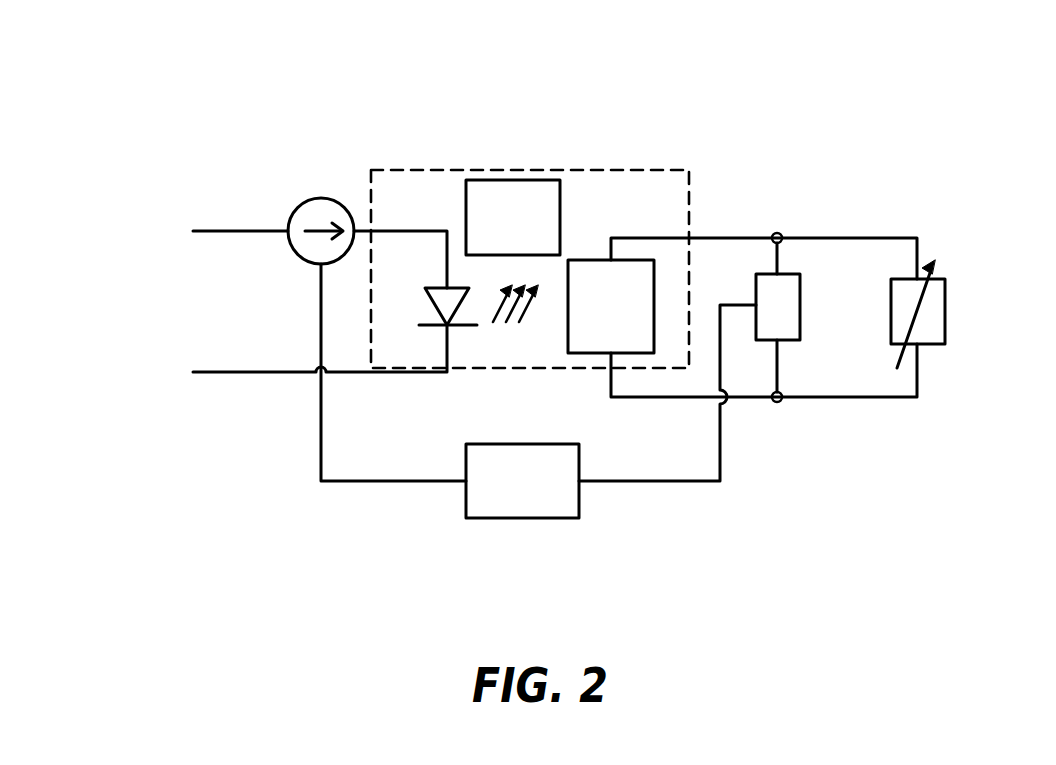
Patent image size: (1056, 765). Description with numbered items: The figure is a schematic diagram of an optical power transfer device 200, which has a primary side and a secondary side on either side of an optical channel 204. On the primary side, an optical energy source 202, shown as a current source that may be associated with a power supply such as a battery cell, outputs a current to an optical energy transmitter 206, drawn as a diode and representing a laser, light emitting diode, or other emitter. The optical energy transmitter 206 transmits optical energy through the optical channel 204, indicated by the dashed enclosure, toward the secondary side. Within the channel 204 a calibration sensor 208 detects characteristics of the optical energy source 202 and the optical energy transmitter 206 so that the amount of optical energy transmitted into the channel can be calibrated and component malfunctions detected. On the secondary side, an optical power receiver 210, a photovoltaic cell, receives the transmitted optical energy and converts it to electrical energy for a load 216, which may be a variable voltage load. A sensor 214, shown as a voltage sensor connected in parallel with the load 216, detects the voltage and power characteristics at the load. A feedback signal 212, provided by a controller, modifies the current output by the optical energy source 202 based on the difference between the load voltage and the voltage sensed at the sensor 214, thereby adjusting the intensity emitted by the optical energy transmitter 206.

The optical power transfer device 200 is at (118, 66).
The optical energy source 202 is at (305, 200).
The optical channel 204 is at (640, 137).
The optical energy transmitter 206 is at (447, 285).
The calibration sensor 208 is at (505, 178).
The optical power receiver 210 is at (568, 327).
The feedback signal 212 is at (508, 518).
The sensor 214 is at (800, 273).
The load 216 is at (945, 280).